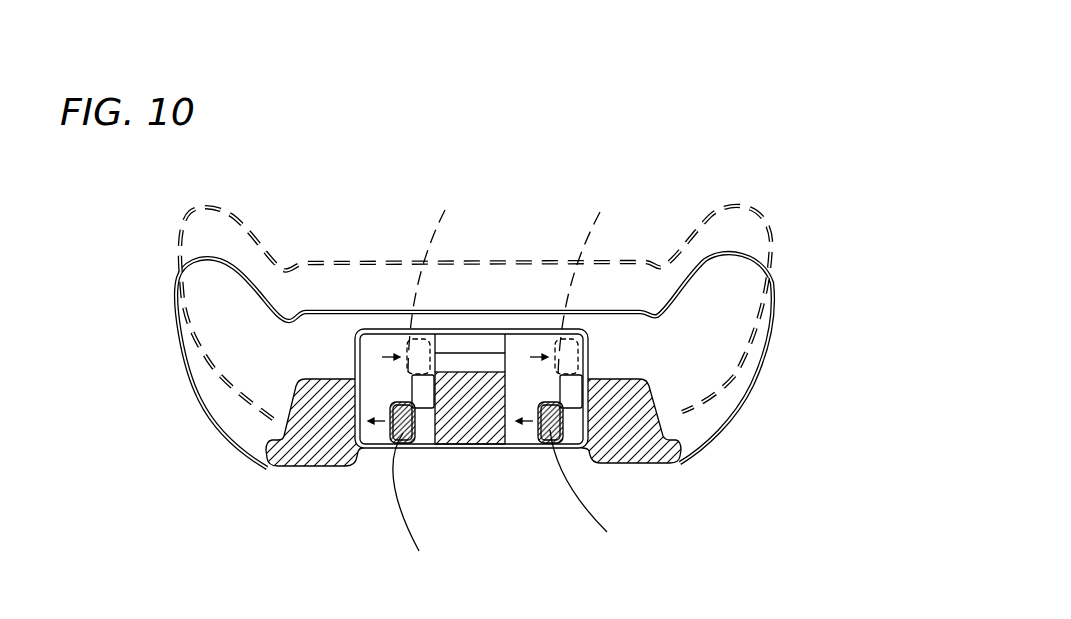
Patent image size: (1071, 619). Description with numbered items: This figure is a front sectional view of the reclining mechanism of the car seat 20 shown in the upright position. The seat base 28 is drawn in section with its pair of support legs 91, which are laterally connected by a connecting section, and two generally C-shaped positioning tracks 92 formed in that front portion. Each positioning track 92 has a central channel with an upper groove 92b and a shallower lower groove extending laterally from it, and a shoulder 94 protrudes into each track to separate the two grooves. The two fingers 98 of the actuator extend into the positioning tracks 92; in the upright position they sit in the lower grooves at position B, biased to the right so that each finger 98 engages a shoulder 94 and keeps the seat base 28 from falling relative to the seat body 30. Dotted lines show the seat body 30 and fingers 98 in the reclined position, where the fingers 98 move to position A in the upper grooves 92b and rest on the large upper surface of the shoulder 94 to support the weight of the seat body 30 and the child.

The car seat 20 is at (520, 298).
The seat base 28 is at (462, 354).
The seat body 30 is at (779, 218).
The support legs 91 is at (312, 447).
The positioning track 92 is at (417, 346).
The upper groove 92b is at (572, 338).
The shoulder 94 is at (412, 383).
The fingers 98 is at (398, 428).